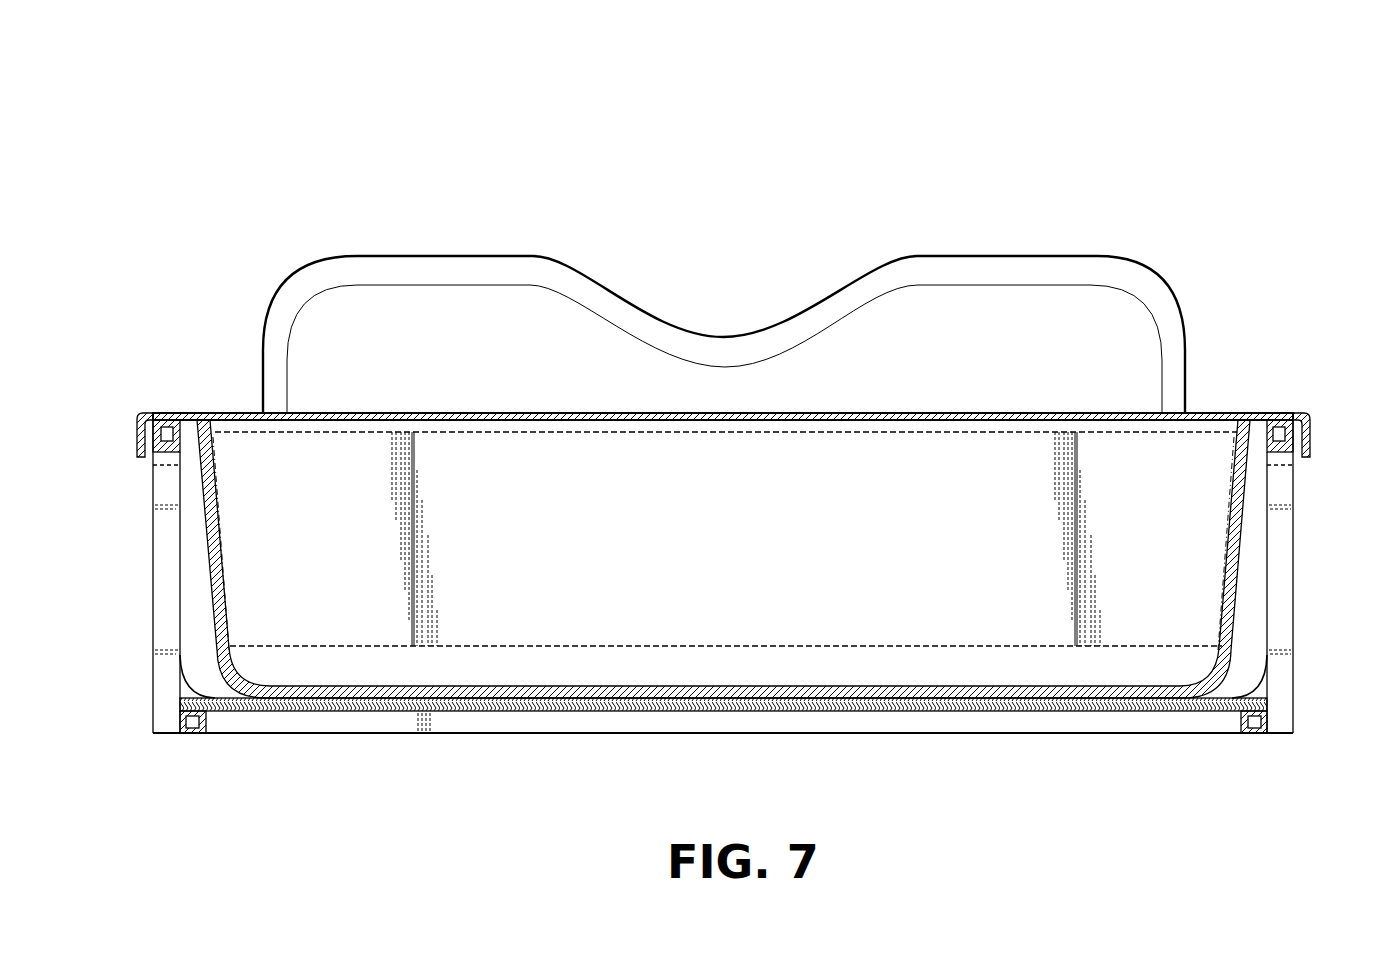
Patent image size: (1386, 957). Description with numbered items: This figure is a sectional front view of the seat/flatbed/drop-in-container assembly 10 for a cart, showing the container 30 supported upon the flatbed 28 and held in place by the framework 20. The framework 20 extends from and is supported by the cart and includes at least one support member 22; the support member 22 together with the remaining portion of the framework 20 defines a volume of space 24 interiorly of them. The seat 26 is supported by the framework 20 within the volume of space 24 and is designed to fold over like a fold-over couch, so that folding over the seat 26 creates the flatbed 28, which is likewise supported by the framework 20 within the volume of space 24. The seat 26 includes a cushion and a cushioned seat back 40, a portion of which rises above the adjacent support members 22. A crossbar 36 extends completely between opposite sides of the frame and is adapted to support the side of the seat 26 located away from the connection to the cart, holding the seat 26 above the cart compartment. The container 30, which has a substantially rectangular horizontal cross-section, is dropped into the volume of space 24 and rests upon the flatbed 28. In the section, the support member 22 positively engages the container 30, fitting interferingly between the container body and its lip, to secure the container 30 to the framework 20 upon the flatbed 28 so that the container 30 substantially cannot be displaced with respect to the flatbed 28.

The assembly 10 is at (505, 138).
The framework 20 is at (110, 582).
The support member 22 is at (140, 480).
The volume of space 24 is at (1252, 515).
The seat 26 is at (721, 326).
The flatbed 28 is at (1233, 690).
The container 30 is at (1246, 593).
The crossbar 36 is at (1130, 720).
The seat back 40 is at (1130, 357).